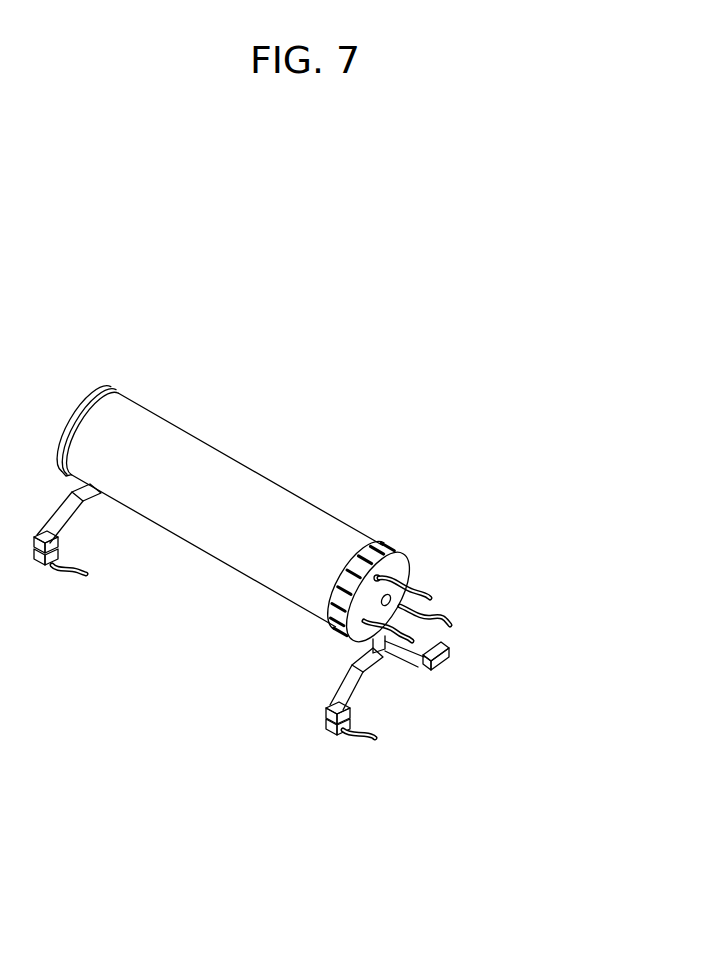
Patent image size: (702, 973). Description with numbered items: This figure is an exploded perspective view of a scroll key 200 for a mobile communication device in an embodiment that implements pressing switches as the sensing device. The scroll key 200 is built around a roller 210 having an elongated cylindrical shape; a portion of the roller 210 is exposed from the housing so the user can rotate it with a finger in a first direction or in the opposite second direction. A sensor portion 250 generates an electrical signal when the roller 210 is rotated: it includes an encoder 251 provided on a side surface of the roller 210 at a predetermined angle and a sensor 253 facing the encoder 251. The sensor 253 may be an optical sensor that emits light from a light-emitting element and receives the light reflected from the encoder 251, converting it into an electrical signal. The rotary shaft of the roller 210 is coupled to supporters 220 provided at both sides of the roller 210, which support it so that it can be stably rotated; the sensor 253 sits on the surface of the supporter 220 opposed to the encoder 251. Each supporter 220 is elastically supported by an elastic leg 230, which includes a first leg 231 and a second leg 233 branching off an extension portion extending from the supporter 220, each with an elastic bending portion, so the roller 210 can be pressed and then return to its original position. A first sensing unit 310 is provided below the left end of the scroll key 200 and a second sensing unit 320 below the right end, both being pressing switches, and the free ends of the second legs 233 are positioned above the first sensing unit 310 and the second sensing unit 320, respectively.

The scroll key 200 is at (290, 298).
The roller 210 is at (182, 428).
The supporter 220 is at (93, 387).
The elastic leg 230 is at (543, 633).
The first leg 231 is at (448, 652).
The second leg 233 is at (356, 703).
The sensor portion 250 is at (477, 493).
The encoder 251 is at (379, 546).
The sensor 253 is at (404, 565).
The first sensing unit 310 is at (47, 565).
The second sensing unit 320 is at (338, 729).